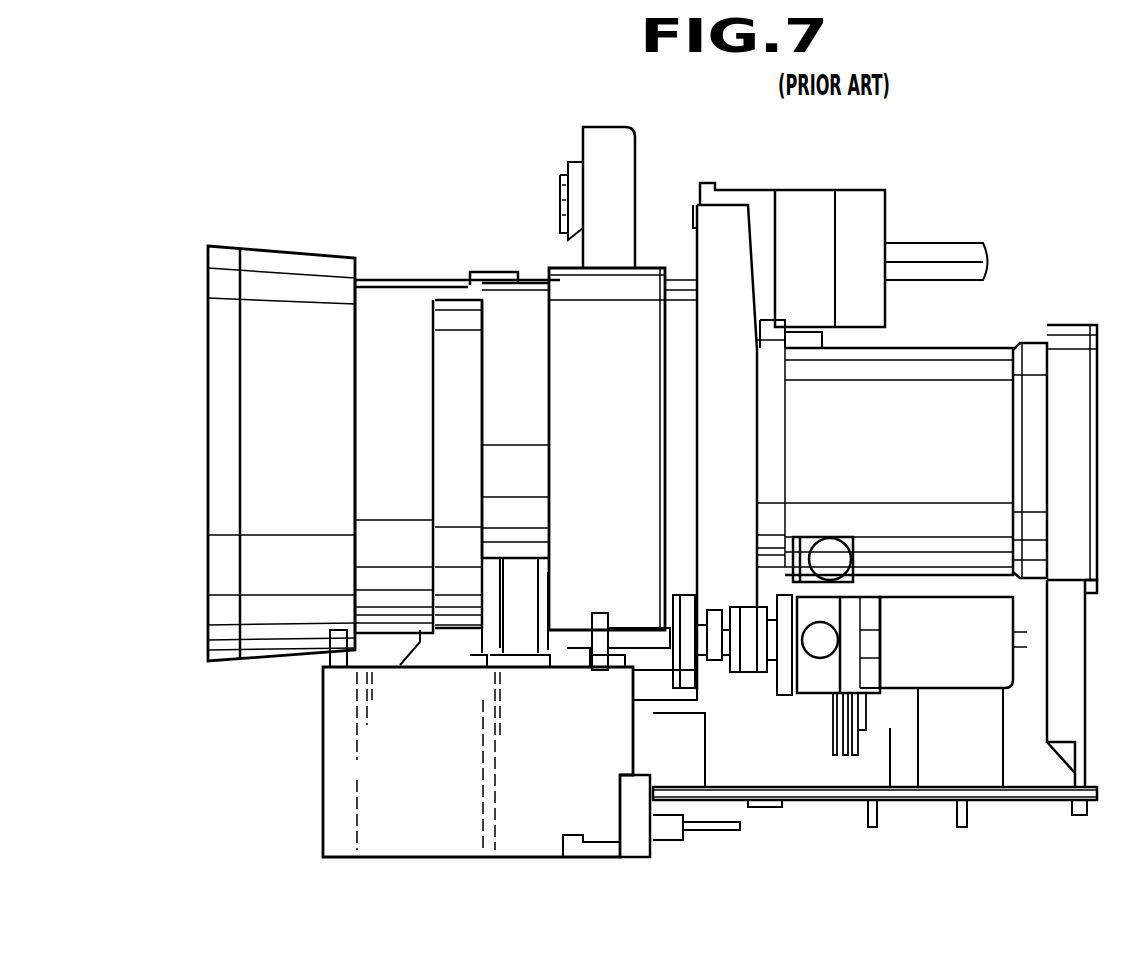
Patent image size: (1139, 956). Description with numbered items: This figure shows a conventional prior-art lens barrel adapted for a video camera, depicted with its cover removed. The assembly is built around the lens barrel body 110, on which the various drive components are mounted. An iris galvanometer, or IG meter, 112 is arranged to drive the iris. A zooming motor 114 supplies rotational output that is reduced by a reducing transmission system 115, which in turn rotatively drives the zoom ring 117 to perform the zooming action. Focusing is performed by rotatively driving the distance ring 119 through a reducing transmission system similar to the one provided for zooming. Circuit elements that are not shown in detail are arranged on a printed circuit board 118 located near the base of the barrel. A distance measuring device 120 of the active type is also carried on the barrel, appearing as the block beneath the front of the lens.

The lens barrel body 110 is at (507, 258).
The iris galvanometer (IG meter) 112 is at (857, 228).
The zooming motor 114 is at (977, 668).
The reducing transmission system 115 is at (812, 728).
The zoom ring 117 is at (637, 320).
The printed circuit board 118 is at (910, 800).
The distance ring 119 is at (258, 557).
The distance measuring device 120 is at (408, 737).